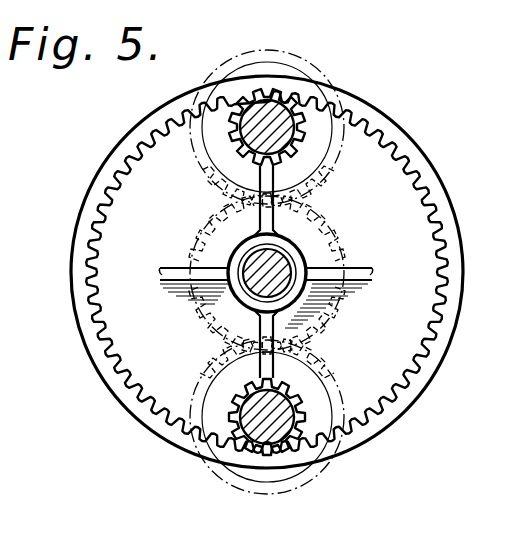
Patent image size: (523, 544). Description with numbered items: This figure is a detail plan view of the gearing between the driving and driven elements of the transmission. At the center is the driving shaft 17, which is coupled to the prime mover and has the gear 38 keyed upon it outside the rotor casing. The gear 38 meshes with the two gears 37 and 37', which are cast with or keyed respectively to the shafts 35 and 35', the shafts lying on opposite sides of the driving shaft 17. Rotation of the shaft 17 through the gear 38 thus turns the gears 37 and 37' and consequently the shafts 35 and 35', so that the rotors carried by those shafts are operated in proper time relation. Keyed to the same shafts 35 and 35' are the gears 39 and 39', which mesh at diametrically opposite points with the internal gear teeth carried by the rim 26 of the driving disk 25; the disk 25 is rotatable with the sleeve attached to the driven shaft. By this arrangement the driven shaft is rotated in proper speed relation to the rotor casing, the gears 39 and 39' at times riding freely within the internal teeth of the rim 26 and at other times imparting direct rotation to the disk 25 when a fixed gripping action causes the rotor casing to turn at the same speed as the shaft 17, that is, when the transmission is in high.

The driving shaft 17 is at (250, 287).
The disk 25 is at (407, 335).
The rim 26 is at (373, 438).
The shaft 35 is at (299, 416).
The shaft 35' is at (302, 115).
The gear 37 is at (275, 415).
The gear 37' is at (283, 128).
The gear 38 is at (348, 217).
The gear 39 is at (255, 417).
The gear 39' is at (246, 127).